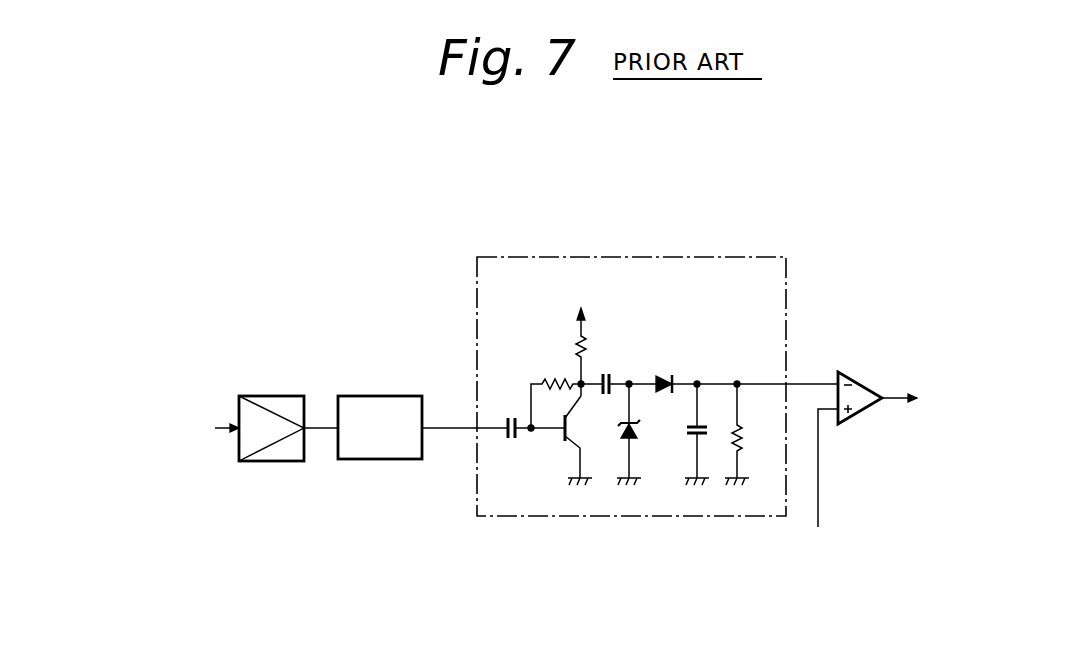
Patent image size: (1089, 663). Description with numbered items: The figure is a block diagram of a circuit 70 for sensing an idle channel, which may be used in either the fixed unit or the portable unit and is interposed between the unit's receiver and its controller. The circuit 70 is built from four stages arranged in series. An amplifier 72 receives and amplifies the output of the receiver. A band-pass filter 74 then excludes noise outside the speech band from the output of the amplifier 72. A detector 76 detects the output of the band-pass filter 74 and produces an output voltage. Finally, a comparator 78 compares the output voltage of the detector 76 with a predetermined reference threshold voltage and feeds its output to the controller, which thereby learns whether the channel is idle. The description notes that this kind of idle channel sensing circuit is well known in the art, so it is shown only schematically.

The circuit for sensing an idle channel 70 is at (822, 247).
The amplifier 72 is at (268, 396).
The band-pass filter 74 is at (379, 396).
The detector 76 is at (652, 257).
The comparator 78 is at (862, 383).